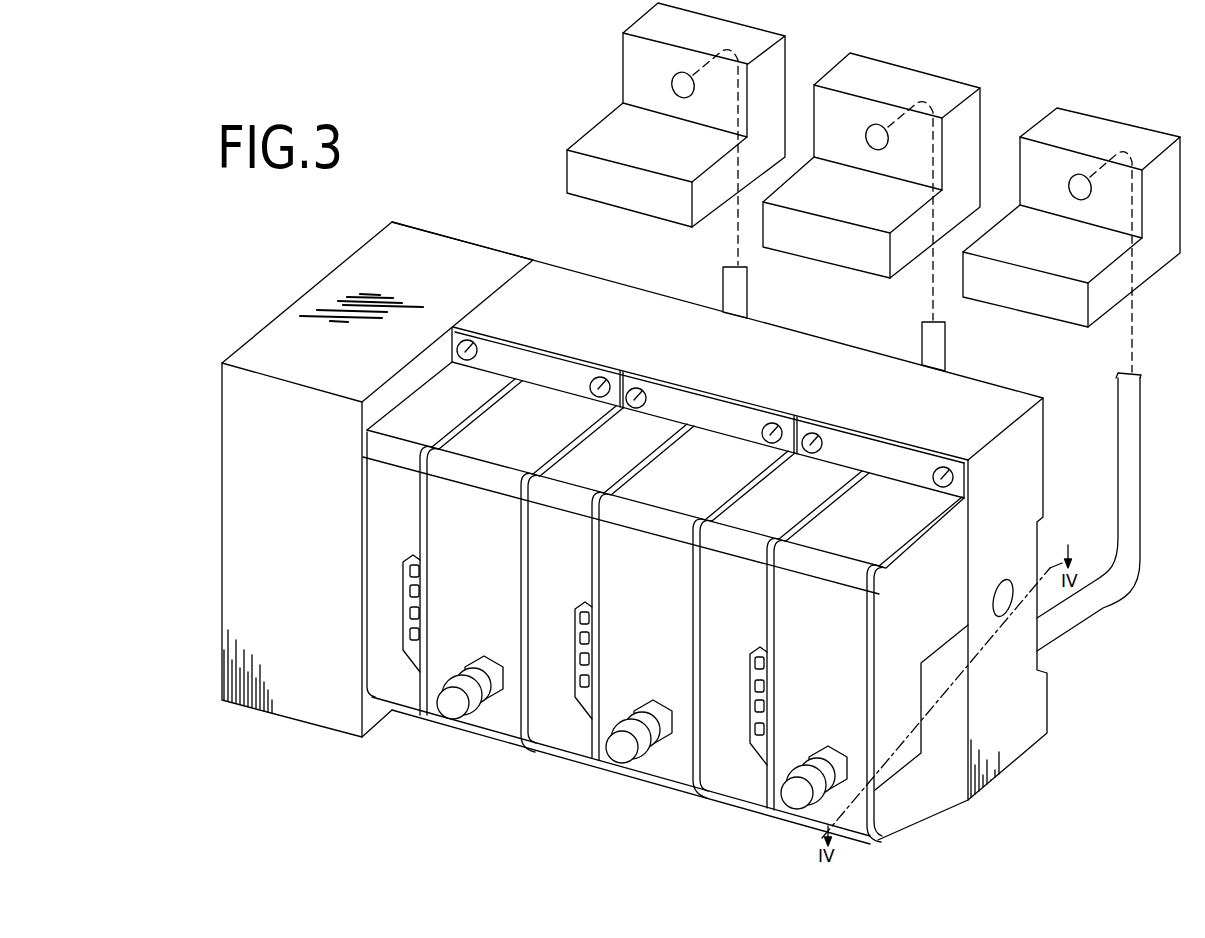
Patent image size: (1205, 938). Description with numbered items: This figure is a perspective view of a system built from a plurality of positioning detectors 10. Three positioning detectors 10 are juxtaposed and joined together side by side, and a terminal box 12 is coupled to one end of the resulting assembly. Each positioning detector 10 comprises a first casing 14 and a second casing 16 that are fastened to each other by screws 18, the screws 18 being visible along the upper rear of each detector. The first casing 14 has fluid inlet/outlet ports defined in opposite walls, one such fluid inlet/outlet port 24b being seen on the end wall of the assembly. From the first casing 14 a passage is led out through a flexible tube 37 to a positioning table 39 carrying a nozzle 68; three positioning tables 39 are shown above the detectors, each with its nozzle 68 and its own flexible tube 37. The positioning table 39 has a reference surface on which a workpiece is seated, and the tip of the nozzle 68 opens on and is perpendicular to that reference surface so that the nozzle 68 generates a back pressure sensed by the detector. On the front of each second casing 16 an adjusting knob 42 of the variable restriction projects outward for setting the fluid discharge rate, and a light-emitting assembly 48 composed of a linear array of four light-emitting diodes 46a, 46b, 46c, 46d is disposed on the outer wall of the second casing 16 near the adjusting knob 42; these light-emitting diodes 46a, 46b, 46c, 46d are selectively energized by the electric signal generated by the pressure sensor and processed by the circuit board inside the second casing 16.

The positioning detector 10 is at (630, 252).
The terminal box 12 is at (237, 470).
The first casing 14 is at (620, 291).
The second casing 16 is at (492, 720).
The screws 18 is at (595, 362).
The fluid inlet/outlet port 24b is at (1005, 577).
The flexible tube 37 is at (723, 292).
The positioning table 39 is at (630, 55).
The adjusting knob 42 is at (453, 705).
The light-emitting diode 46a is at (419, 571).
The light-emitting diode 46b is at (419, 591).
The light-emitting diode 46c is at (419, 613).
The light-emitting diode 46d is at (419, 634).
The light-emitting assembly 48 is at (397, 598).
The nozzle 68 is at (672, 85).